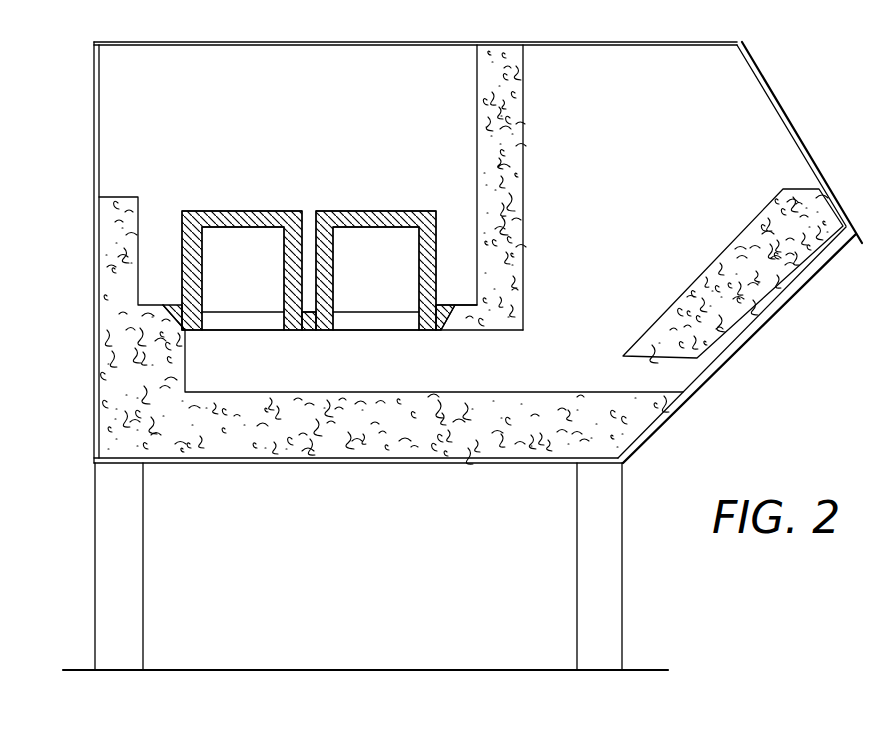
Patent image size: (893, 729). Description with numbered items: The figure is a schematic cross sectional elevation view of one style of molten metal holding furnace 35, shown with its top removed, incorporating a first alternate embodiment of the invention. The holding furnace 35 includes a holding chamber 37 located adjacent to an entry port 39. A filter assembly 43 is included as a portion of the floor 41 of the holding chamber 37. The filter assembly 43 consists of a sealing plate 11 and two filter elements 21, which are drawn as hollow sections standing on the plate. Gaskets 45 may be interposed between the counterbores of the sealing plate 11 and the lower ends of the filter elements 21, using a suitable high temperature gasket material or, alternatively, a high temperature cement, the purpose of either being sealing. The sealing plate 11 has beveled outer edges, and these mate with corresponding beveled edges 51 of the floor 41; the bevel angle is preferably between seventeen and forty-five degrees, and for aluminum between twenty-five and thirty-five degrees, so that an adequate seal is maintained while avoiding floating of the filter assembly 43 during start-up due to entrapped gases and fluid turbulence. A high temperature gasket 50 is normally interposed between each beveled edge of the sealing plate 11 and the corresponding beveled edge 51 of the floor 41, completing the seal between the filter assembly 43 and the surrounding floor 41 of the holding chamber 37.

The sealing plate 11 is at (317, 330).
The filter elements 21 is at (224, 165).
The holding furnace 35 is at (80, 219).
The holding chamber 37 is at (142, 44).
The entry port 39 is at (94, 104).
The floor 41 is at (463, 300).
The filter assembly 43 is at (342, 189).
The gaskets 45 is at (180, 305).
The high temperature gasket 50 is at (188, 330).
The beveled edges 51 is at (175, 322).